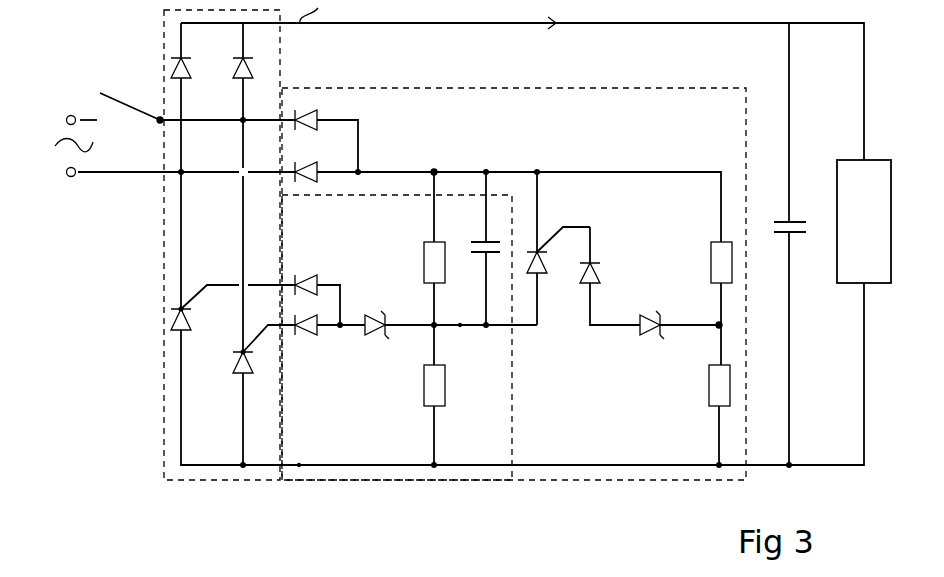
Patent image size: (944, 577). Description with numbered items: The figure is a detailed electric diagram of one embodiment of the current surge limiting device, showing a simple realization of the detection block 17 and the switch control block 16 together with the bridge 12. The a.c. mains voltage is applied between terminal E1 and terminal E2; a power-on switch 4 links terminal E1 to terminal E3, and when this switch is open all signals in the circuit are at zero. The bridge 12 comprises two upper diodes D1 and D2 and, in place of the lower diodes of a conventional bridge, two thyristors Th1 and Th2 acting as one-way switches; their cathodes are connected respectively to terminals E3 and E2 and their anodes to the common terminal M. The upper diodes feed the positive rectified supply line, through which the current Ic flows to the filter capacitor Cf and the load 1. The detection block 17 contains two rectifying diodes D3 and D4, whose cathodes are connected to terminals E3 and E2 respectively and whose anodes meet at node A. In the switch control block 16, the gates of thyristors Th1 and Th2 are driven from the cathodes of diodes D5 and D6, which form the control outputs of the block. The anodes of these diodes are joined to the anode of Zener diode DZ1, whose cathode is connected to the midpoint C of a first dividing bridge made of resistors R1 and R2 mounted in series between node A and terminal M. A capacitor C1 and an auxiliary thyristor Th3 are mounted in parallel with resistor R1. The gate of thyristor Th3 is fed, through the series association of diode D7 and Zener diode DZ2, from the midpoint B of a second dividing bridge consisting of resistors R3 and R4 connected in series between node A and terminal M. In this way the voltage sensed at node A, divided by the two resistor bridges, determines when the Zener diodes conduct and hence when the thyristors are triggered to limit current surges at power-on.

The load 1 is at (837, 260).
The power-on switch 4 is at (146, 102).
The bridge 12 is at (216, 482).
The switch control block 16 is at (376, 482).
The detection block 17 is at (410, 88).
The terminal E1 is at (55, 121).
The terminal E2 is at (55, 173).
The terminal E3 is at (158, 116).
The diode D1 is at (255, 81).
The diode D2 is at (194, 81).
The rectifying diode D3 is at (322, 113).
The rectifying diode D4 is at (322, 165).
The diode D5 is at (308, 274).
The diode D6 is at (308, 337).
The diode D7 is at (606, 270).
The Zener diode DZ1 is at (377, 314).
The Zener diode DZ2 is at (641, 338).
The thyristor Th1 is at (233, 308).
The thyristor Th2 is at (244, 351).
The auxiliary thyristor Th3 is at (558, 267).
The resistor R1 is at (418, 262).
The resistor R2 is at (415, 385).
The resistor R3 is at (706, 262).
The resistor R4 is at (703, 387).
The capacitor C1 is at (478, 235).
The capacitor Cf is at (780, 214).
The current Ic is at (539, 14).
The node A is at (435, 170).
The midpoint B is at (717, 326).
The midpoint C is at (460, 327).
The terminal M is at (298, 468).